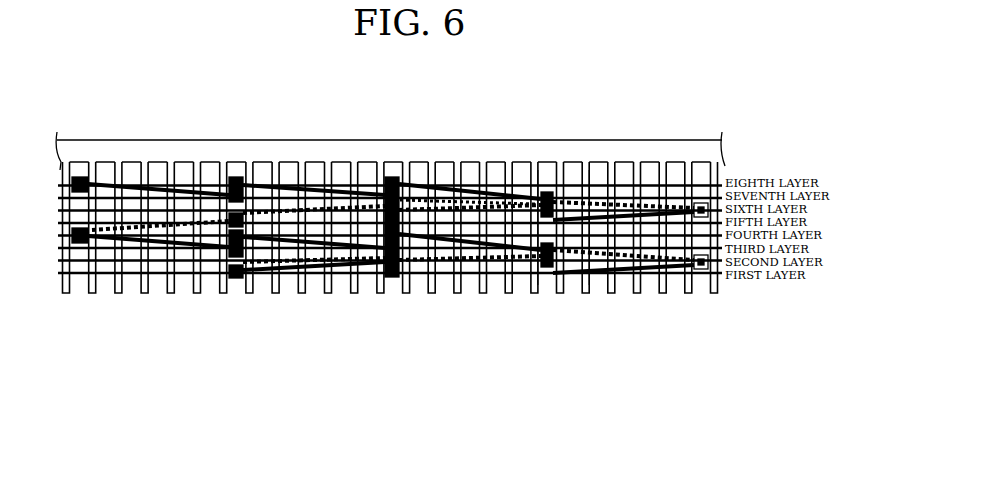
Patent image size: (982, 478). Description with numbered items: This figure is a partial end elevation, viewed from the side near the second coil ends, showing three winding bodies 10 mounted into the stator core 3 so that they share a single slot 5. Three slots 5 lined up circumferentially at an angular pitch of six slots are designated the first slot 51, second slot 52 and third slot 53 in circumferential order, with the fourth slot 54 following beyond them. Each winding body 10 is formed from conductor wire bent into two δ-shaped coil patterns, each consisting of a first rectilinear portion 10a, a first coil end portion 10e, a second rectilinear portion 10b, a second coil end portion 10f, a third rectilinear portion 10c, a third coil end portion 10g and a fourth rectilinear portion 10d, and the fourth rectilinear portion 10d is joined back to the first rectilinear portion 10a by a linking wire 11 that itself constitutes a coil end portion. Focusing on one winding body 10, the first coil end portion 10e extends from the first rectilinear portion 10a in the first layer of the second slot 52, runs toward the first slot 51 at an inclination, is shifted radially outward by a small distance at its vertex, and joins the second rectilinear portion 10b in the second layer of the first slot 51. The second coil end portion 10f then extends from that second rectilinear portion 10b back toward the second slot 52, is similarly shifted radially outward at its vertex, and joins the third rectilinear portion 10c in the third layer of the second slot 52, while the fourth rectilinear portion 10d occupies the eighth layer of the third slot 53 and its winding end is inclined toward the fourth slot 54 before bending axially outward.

The stator core 3 is at (147, 140).
The slot 5 is at (186, 163).
The winding body 10 is at (315, 294).
The first rectilinear portion 10a is at (570, 181).
The second rectilinear portion 10b is at (710, 163).
The third rectilinear portion 10c is at (547, 178).
The fourth rectilinear portion 10d is at (392, 163).
The first coil end portion 10e is at (601, 180).
The second coil end portion 10f is at (647, 186).
The third coil end portion 10g is at (505, 188).
The linking wire 11 is at (463, 292).
The first slot 51 is at (697, 294).
The second slot 52 is at (540, 294).
The third slot 53 is at (393, 294).
The fourth slot 54 is at (235, 294).